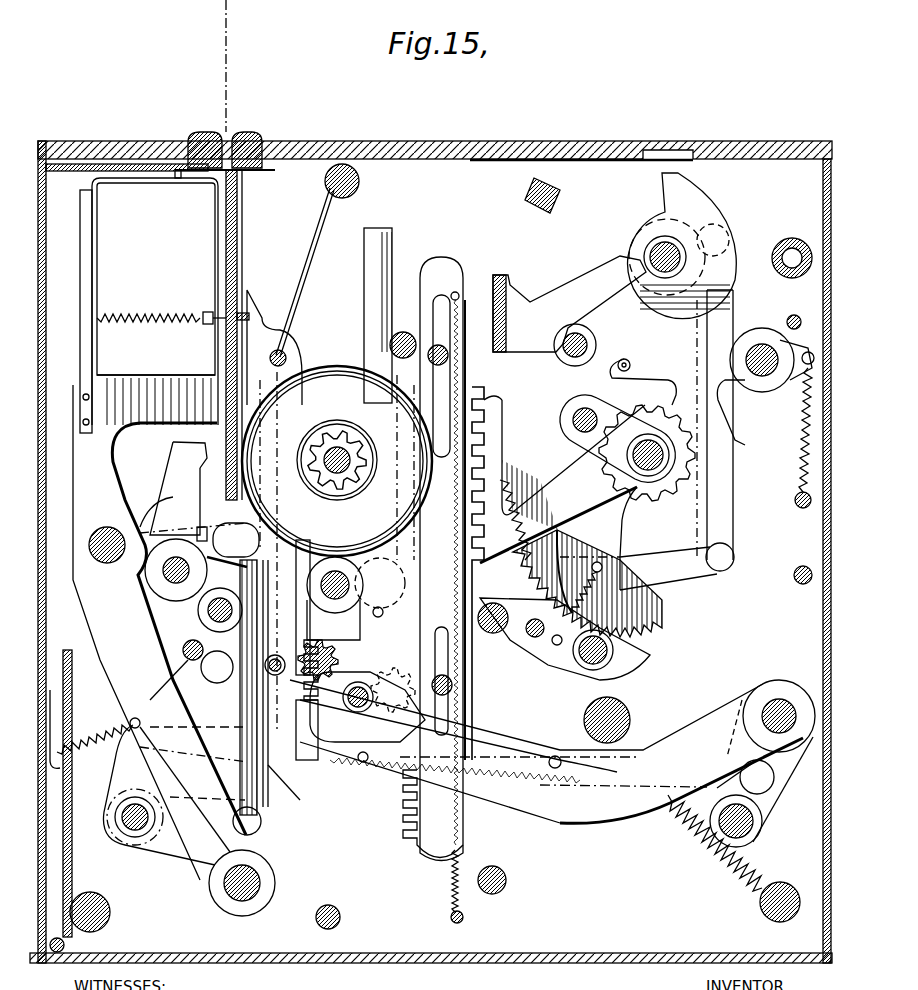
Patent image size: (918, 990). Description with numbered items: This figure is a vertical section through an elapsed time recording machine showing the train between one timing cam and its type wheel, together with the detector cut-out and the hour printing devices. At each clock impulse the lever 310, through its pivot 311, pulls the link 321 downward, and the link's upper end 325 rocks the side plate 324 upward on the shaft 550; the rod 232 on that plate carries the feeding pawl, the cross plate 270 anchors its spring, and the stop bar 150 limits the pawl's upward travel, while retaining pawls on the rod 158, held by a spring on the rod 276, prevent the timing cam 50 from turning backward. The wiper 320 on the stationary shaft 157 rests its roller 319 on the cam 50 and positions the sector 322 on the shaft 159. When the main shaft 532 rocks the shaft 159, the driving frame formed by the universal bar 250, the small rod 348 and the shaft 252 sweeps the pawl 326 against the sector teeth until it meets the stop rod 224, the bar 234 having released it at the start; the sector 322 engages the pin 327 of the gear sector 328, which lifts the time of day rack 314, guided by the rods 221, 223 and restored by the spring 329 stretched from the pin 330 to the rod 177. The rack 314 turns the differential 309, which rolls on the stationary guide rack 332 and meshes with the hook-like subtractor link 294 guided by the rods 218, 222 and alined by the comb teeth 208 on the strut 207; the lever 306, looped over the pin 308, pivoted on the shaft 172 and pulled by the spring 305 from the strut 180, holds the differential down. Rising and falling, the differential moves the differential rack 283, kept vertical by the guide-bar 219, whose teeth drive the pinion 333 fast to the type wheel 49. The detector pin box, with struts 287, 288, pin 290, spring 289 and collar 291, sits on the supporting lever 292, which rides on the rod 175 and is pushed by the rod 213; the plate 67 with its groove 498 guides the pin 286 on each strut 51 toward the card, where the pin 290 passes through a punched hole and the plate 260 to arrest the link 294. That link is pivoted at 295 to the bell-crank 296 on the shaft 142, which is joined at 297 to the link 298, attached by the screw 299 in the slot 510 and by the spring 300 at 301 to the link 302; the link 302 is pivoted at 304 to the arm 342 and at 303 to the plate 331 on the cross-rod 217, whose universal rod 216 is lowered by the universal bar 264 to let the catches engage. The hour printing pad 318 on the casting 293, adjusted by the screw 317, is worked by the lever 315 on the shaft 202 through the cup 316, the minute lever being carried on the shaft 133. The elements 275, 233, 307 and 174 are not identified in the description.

The groove 498 is at (190, 138).
The flat plate 67 is at (70, 163).
The pin 286 is at (178, 178).
The pin box strut 51 is at (118, 176).
The strut 287 is at (213, 232).
The strut 288 is at (92, 268).
The compression spring 289 is at (140, 325).
The detector pin 290 is at (200, 325).
The collar 291 is at (207, 355).
The supporting lever 292 is at (73, 390).
The guide plate 260 is at (238, 220).
The supporting strut 207 is at (360, 178).
The comb teeth 208 is at (310, 222).
The guide rod 218 is at (284, 352).
The link 294 is at (262, 298).
The type wheel 49 is at (342, 372).
The pinion 333 is at (352, 448).
The differential rack 283 is at (376, 232).
The guide-bar 219 is at (404, 332).
The pin 330 is at (456, 292).
The time of day rack 314 is at (462, 505).
The spring 329 is at (433, 841).
The guide rod 221 is at (449, 358).
The stop bar 150 is at (530, 185).
The timing cam 50 is at (700, 195).
The shaft 550 is at (658, 245).
The upper end of link 325 is at (730, 225).
The rod 158 is at (785, 242).
The rod 276 is at (793, 314).
The cross plate 270 is at (512, 295).
The side plate 324 is at (595, 305).
The rod 232 is at (590, 345).
The roller 319 is at (630, 360).
The wiper 320 is at (663, 380).
The stationary shaft 157 is at (766, 378).
The spring 275 is at (788, 430).
The pin 233 is at (800, 508).
The bar 234 is at (800, 584).
The link 321 is at (737, 485).
The pivot 311 is at (734, 562).
The lever 310 is at (680, 568).
The gear sector 328 is at (502, 412).
The universal bar 250 is at (583, 407).
The sector 322 is at (645, 420).
The shaft 159 is at (652, 470).
The pin 327 is at (505, 470).
The small rod 348 is at (640, 575).
The stop rod 224 is at (535, 619).
The pawl 326 is at (640, 665).
The shaft 252 is at (585, 658).
The main shaft 532 is at (590, 710).
The shaft 172 is at (775, 705).
The hour printing pad 318 is at (188, 447).
The lever casting 293 is at (183, 478).
The rounded cup 316 is at (203, 520).
The screw 317 is at (128, 528).
The lever 315 is at (262, 528).
The shaft 133 is at (172, 582).
The rod 213 is at (150, 580).
The cross-rod 217 is at (205, 614).
The plate 331 is at (183, 652).
The pivot 303 is at (216, 680).
The universal rod 216 is at (161, 680).
The pivot 297 is at (138, 722).
The link 302 is at (230, 680).
The stationary guide rack 332 is at (296, 605).
The guide rod 222 is at (273, 651).
The shaft 202 is at (330, 598).
The differential 309 is at (318, 659).
The slide 307 is at (362, 708).
The pin 308 is at (360, 688).
The guide rod 223 is at (452, 686).
The link 298 is at (307, 757).
The screw 299 is at (365, 763).
The slot 510 is at (304, 802).
The pivot 295 is at (261, 829).
The rod 175 is at (262, 876).
The shaft 142 is at (132, 830).
The bell-crank lever 296 is at (162, 850).
The tension spring 300 is at (500, 775).
The spring attachment point 301 is at (552, 795).
The lever 306 is at (638, 815).
The arm 342 is at (790, 775).
The pivot 304 is at (770, 790).
The universal bar 264 is at (750, 835).
The spring 305 is at (700, 845).
The strut 180 is at (760, 902).
The pin 174 is at (506, 880).
The rod 177 is at (463, 918).